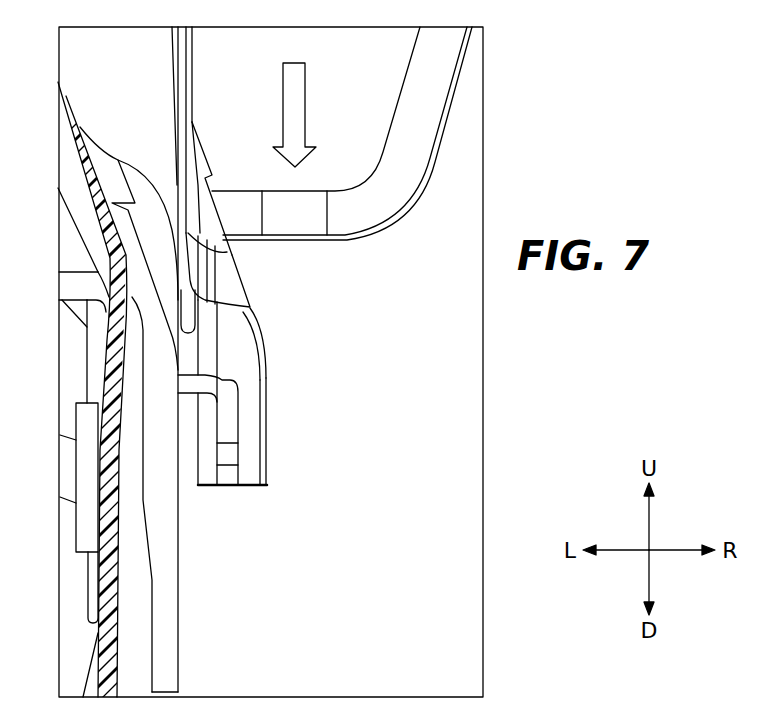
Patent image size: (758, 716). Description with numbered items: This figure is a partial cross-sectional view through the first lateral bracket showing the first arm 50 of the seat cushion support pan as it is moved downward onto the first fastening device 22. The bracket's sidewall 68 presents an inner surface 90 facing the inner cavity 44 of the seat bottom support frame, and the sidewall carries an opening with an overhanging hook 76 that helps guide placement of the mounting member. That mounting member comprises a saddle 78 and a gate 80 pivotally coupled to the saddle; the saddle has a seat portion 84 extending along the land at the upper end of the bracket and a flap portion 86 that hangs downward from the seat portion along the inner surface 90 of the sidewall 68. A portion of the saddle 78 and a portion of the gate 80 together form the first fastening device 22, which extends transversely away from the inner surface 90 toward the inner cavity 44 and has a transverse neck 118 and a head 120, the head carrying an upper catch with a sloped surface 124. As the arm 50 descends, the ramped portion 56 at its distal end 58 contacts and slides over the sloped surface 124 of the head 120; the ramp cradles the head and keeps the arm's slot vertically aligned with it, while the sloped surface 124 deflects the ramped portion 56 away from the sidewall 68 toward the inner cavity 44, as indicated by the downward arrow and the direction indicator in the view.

The first fastening device 22 is at (278, 481).
The inner cavity 44 is at (448, 361).
The first arm 50 is at (465, 52).
The ramped portion 56 is at (217, 210).
The distal end 58 is at (248, 274).
The sidewall 68 is at (98, 633).
The overhanging hook 76 is at (240, 418).
The saddle 78 is at (178, 662).
The gate 80 is at (87, 347).
The seat portion 84 is at (138, 163).
The flap portion 86 is at (178, 610).
The inner surface 90 is at (128, 594).
The transverse neck 118 is at (180, 448).
The head 120 is at (266, 368).
The sloped surface 124 is at (253, 320).